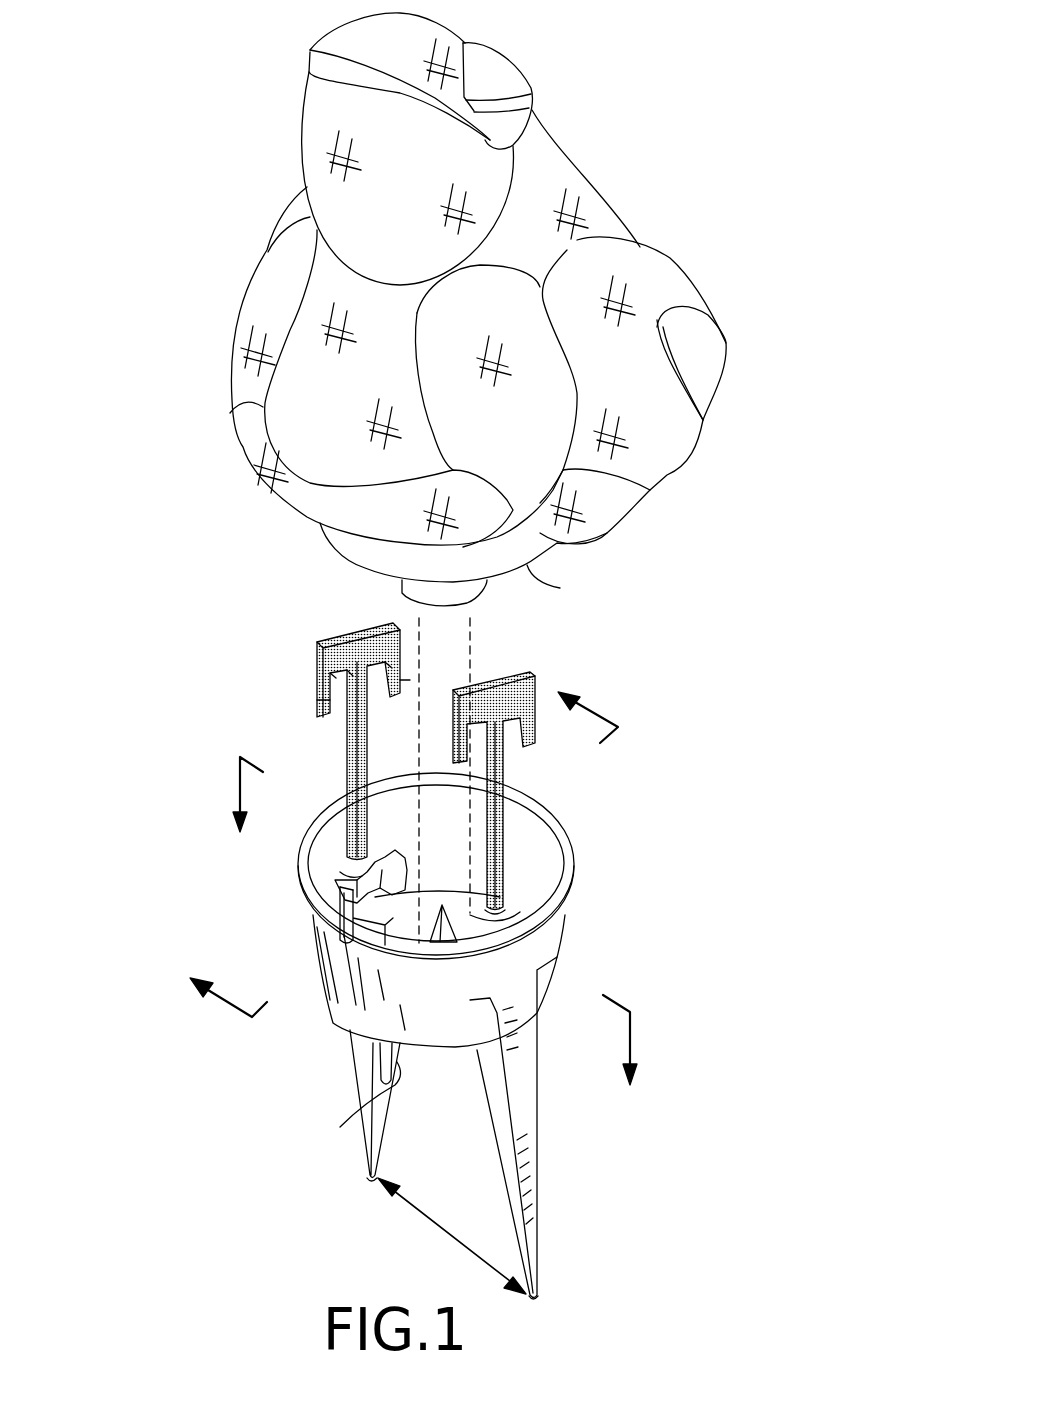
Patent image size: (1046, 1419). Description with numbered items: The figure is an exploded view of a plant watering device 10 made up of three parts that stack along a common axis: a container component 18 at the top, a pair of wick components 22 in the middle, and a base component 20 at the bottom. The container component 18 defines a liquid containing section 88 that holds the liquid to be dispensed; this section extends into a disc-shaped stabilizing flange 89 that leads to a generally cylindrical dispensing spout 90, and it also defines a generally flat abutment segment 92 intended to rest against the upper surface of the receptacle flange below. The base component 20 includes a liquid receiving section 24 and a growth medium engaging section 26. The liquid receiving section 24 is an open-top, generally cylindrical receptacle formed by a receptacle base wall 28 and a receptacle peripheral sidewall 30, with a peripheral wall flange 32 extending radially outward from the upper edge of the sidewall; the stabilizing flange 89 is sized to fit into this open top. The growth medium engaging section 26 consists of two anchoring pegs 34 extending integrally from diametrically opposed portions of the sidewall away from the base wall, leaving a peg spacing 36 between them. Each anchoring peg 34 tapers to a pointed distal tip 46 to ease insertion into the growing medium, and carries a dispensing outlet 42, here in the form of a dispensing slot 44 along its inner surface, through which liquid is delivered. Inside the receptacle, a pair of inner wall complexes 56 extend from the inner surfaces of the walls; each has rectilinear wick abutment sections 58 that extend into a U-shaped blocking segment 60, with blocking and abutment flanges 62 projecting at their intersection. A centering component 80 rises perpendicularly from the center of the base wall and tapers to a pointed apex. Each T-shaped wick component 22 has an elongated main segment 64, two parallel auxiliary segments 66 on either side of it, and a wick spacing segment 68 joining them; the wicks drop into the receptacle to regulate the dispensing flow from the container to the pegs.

The device 10 is at (180, 690).
The container component 18 is at (456, 325).
The base component 20 is at (647, 933).
The wick component 22 is at (300, 650).
The liquid receiving section 24 is at (418, 902).
The growth medium engaging section 26 is at (297, 1168).
The receptacle base wall 28 is at (510, 907).
The receptacle peripheral sidewall 30 is at (530, 828).
The peripheral wall flange 32 is at (560, 880).
The anchoring peg 34 is at (445, 1127).
The peg spacing 36 is at (443, 1232).
The dispensing outlet 42 is at (378, 1053).
The dispensing slot 44 is at (354, 1106).
The pointed distal tip 46 is at (373, 1175).
The inner wall complex 56 is at (338, 866).
The wick abutment section 58 is at (377, 852).
The U-shaped blocking segment 60 is at (380, 917).
The blocking and abutment flange 62 is at (380, 917).
The main segment 64 is at (355, 770).
The auxiliary segment 66 is at (400, 672).
The wick spacing segment 68 is at (380, 633).
The centering component 80 is at (455, 920).
The liquid containing section 88 is at (190, 330).
The stabilizing flange 89 is at (525, 562).
The dispensing spout 90 is at (470, 585).
The flat abutment segment 92 is at (300, 510).